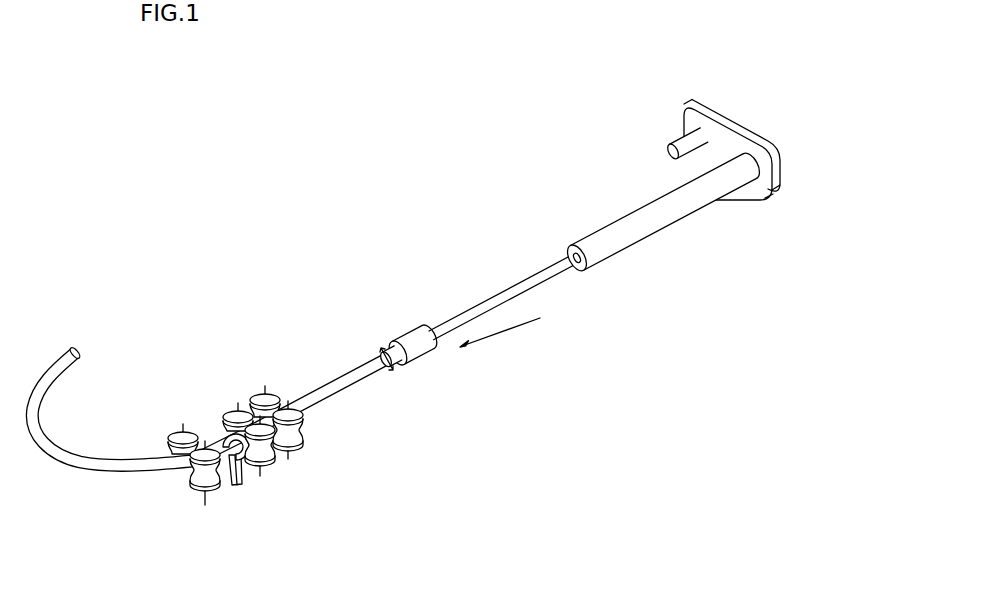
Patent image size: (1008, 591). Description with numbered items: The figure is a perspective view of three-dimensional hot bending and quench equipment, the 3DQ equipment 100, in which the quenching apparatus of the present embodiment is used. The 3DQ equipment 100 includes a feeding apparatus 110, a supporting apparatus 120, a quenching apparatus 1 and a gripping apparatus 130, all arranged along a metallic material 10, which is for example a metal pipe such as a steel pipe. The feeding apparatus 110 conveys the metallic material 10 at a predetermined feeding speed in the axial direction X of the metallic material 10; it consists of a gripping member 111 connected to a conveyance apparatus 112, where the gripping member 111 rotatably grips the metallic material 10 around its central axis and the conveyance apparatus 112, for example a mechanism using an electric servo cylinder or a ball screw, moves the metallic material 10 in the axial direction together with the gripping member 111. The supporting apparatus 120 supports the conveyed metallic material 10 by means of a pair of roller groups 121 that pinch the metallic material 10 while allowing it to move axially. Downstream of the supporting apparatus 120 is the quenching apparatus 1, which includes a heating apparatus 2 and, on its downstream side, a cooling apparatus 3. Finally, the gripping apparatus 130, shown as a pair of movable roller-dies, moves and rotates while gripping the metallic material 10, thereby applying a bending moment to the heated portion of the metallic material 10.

The quenching apparatus 1 is at (254, 485).
The heating apparatus 2 is at (245, 465).
The cooling apparatus 3 is at (268, 467).
The metallic material 10 is at (60, 347).
The 3DQ equipment 100 is at (268, 142).
The feeding apparatus 110 is at (490, 236).
The gripping member 111 is at (414, 325).
The conveyance apparatus 112 is at (595, 232).
The supporting apparatus 120 is at (277, 328).
The roller groups 121 is at (272, 392).
The gripping apparatus 130 is at (189, 430).